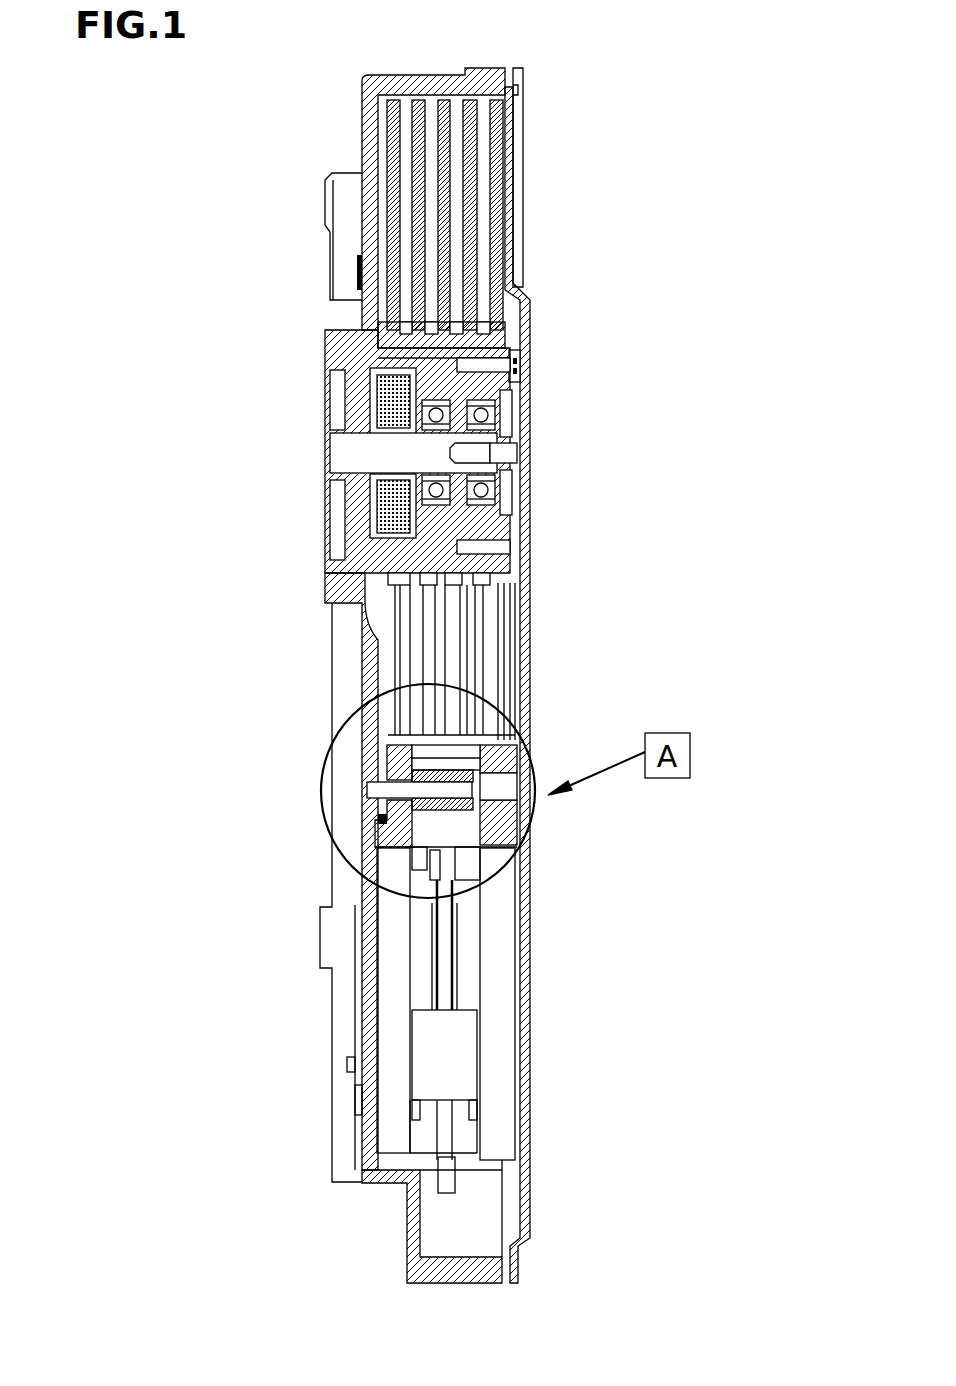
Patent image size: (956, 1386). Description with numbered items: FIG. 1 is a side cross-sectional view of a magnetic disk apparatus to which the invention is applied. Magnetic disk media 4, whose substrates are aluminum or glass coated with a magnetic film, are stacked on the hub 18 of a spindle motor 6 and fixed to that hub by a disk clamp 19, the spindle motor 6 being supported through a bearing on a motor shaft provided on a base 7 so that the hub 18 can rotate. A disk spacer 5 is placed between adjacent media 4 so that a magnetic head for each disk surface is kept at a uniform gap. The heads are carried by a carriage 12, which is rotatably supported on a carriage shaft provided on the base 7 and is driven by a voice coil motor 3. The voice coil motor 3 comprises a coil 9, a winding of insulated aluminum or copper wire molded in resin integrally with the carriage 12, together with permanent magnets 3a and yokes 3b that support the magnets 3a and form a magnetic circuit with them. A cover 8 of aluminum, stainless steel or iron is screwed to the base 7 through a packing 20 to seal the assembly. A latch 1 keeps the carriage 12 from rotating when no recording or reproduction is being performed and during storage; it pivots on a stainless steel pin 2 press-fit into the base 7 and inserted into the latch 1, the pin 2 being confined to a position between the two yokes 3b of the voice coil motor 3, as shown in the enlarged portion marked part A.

The latch 1 is at (393, 748).
The pin 2 is at (400, 788).
The voice coil motor 3 is at (390, 835).
The permanent magnets 3a is at (423, 992).
The yokes 3b is at (393, 930).
The magnetic disk media 4 is at (510, 612).
The disk spacer 5 is at (482, 568).
The spindle motor 6 is at (440, 463).
The base 7 is at (333, 893).
The cover 8 is at (528, 397).
The coil 9 is at (453, 1180).
The carriage 12 is at (503, 693).
The hub 18 is at (528, 378).
The disk clamp 19 is at (528, 343).
The packing 20 is at (522, 90).